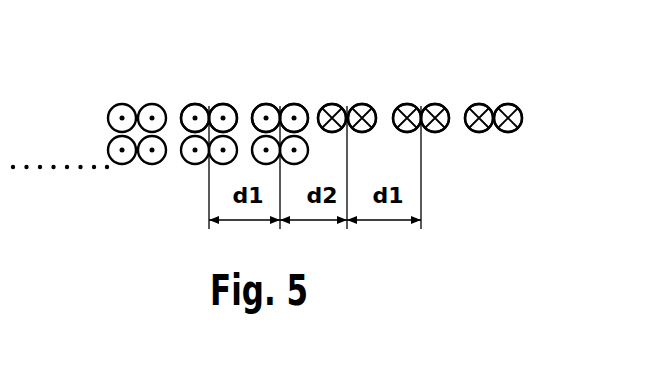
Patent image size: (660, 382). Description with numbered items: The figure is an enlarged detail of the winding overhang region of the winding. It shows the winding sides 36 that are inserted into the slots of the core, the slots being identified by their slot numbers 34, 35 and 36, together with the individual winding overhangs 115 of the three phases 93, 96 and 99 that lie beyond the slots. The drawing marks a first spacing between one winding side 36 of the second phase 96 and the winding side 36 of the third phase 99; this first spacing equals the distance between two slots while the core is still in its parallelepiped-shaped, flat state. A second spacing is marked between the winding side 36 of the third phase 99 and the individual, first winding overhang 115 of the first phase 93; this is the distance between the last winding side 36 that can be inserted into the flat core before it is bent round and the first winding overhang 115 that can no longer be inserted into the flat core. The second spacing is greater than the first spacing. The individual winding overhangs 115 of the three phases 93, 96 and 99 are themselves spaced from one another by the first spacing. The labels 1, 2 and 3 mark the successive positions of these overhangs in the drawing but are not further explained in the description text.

The first conductor pair 1 is at (347, 98).
The second conductor pair 2 is at (421, 98).
The third conductor pair 3 is at (493, 98).
The slot number 34 is at (137, 104).
The slot number 35 is at (209, 104).
The winding side 36 is at (280, 104).
The first phase 93 is at (353, 99).
The second phase 96 is at (204, 101).
The third phase 99 is at (294, 94).
The winding overhang 115 is at (426, 101).